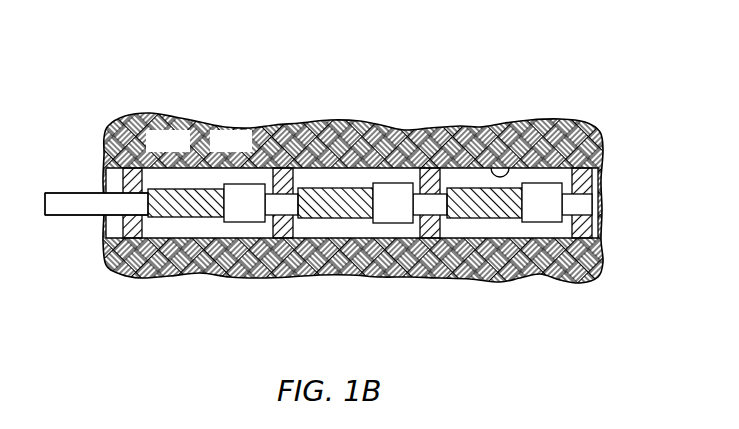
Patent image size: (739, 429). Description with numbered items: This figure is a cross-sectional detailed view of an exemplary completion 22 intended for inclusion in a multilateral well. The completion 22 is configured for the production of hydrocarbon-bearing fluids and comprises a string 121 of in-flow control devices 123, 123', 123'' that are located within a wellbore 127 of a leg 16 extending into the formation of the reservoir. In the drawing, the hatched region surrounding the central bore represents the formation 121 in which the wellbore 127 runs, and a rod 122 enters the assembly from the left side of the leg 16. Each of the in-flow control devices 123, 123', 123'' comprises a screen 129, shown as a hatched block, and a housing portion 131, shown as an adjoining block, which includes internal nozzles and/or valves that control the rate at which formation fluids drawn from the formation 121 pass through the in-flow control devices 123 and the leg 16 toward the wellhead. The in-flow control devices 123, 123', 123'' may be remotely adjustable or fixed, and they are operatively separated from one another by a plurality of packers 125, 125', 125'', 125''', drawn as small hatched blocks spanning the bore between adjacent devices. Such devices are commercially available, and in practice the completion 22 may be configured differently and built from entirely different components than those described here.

The completion 22 is at (359, 100).
The leg 16 is at (78, 193).
The string 121 is at (507, 278).
The rod 122 is at (100, 216).
The in-flow control device 123 is at (189, 241).
The in-flow control device 123' is at (356, 241).
The in-flow control device 123'' is at (505, 241).
The packer 125 is at (118, 167).
The packer 125' is at (267, 167).
The packer 125'' is at (412, 167).
The packer 125''' is at (560, 167).
The wellbore 127 is at (496, 166).
The screen 129 is at (186, 188).
The housing portion 131 is at (243, 183).